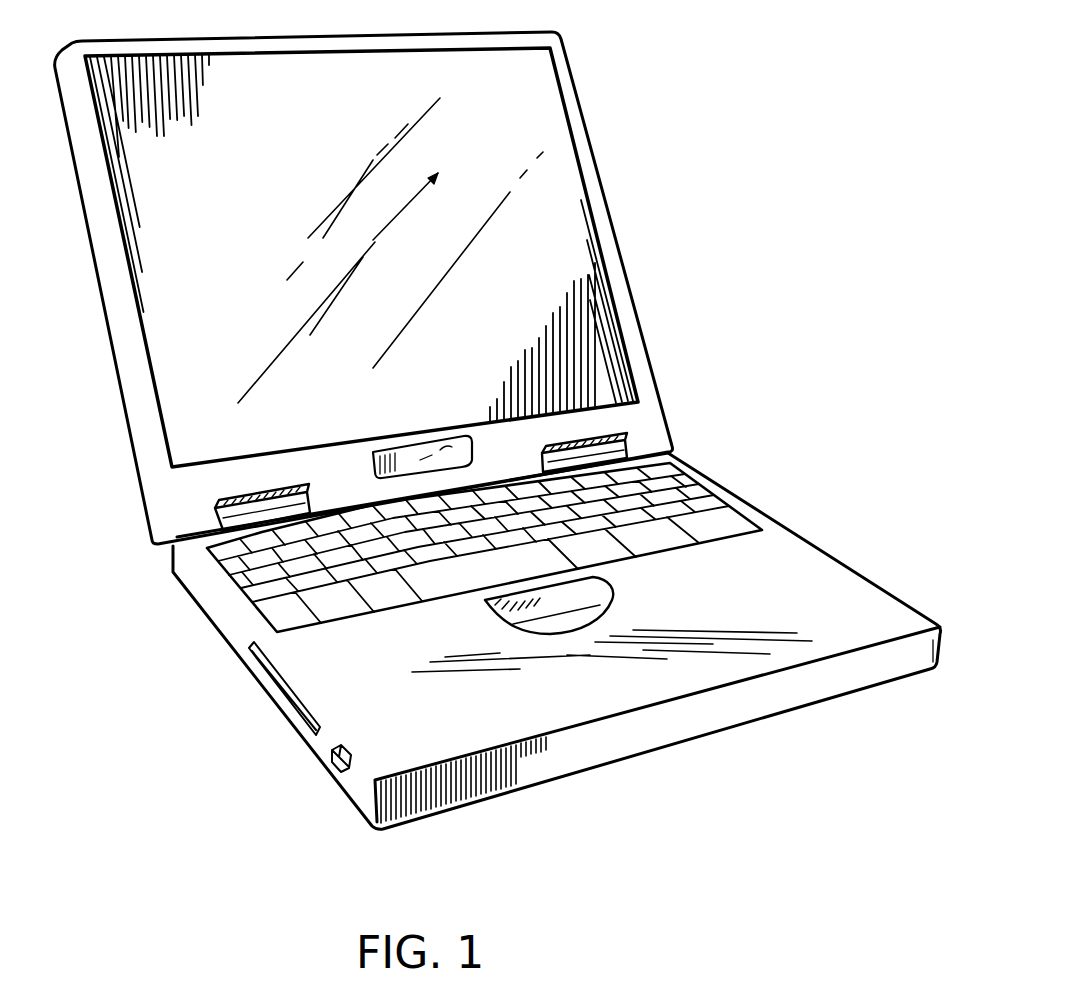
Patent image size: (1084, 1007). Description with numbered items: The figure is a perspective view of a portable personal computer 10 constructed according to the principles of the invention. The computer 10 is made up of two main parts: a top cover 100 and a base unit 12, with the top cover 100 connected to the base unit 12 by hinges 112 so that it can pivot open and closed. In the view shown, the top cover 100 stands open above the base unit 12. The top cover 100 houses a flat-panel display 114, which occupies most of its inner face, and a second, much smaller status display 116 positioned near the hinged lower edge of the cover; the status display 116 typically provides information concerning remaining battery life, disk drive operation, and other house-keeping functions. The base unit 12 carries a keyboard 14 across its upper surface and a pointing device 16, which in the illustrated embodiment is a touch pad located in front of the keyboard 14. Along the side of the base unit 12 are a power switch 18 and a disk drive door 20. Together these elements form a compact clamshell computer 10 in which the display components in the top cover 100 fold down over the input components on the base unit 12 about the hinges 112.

The personal computer 10 is at (695, 92).
The base unit 12 is at (828, 547).
The keyboard 14 is at (263, 598).
The pointing device 16 is at (600, 590).
The power switch 18 is at (330, 770).
The disk drive door 20 is at (272, 693).
The top cover 100 is at (638, 317).
The hinges 112 is at (600, 440).
The flat-panel display 114 is at (550, 232).
The status display 116 is at (445, 445).